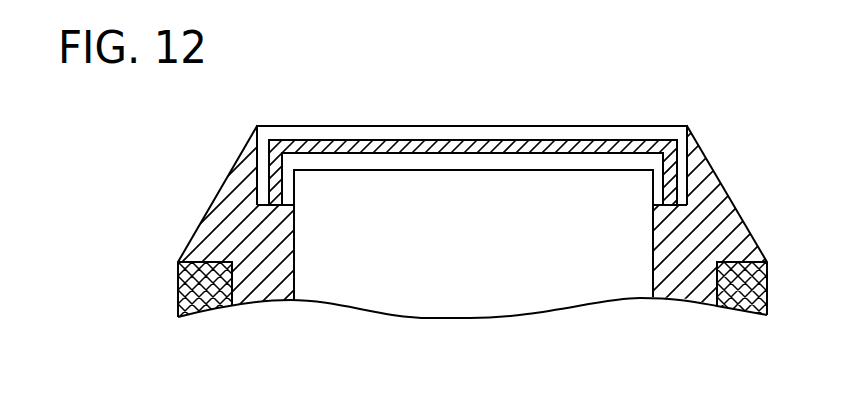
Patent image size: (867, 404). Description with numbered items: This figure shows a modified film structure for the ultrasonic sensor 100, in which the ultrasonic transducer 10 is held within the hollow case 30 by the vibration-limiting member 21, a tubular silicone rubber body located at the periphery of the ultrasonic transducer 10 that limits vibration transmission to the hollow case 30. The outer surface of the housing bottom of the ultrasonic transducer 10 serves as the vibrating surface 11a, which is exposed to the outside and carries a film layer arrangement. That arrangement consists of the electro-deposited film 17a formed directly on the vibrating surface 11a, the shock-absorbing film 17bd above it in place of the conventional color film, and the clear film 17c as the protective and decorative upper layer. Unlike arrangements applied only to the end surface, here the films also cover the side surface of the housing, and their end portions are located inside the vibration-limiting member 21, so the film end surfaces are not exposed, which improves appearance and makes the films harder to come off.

The ultrasonic sensor 100 is at (750, 107).
The vibration-limiting member 21 is at (712, 198).
The hollow case 30 is at (743, 292).
The ultrasonic transducer 10 is at (585, 267).
The clear film 17c is at (338, 135).
The shock-absorbing color film 17bd is at (463, 147).
The electro-deposited film 17a is at (595, 163).
The vibrating surface 11a is at (413, 172).